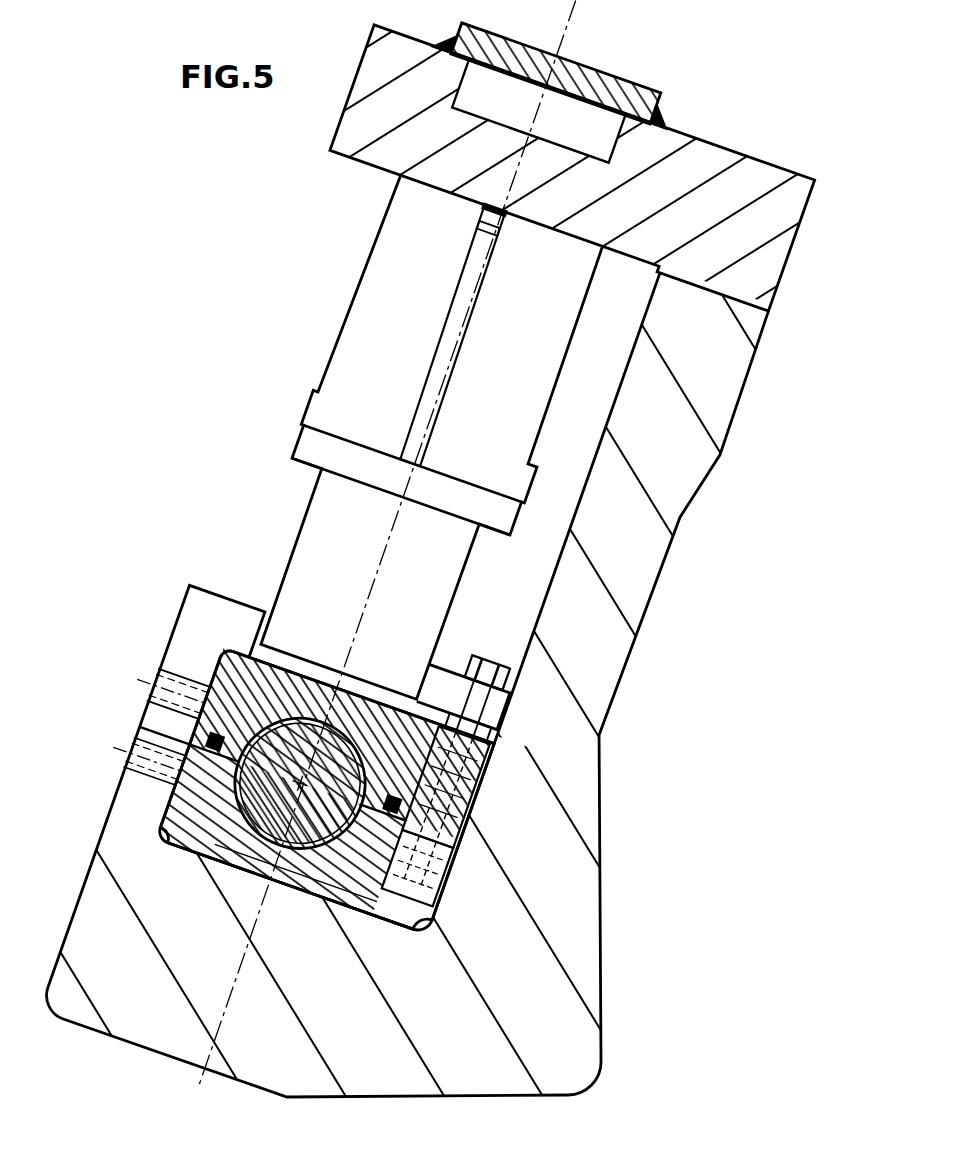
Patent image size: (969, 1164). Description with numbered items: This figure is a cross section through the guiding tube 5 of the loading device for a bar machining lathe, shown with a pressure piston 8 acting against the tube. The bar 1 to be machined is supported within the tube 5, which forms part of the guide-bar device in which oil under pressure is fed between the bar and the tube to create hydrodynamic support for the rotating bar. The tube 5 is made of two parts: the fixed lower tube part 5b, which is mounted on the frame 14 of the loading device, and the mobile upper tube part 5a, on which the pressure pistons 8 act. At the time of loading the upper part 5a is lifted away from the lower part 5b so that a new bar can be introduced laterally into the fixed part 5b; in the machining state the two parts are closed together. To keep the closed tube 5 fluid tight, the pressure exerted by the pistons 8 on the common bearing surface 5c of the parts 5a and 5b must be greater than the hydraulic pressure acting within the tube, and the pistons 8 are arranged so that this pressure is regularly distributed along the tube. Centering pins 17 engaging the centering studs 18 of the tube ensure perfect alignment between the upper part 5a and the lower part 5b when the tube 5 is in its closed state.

The bar 1 is at (292, 750).
The guiding tube 5 is at (200, 757).
The upper tube part 5a is at (240, 680).
The lower tube part 5b is at (212, 830).
The common bearing surface 5c is at (336, 904).
The pressure piston 8 is at (320, 524).
The frame 14 is at (530, 968).
The centering pin 17 is at (440, 818).
The centering stud 18 is at (450, 851).